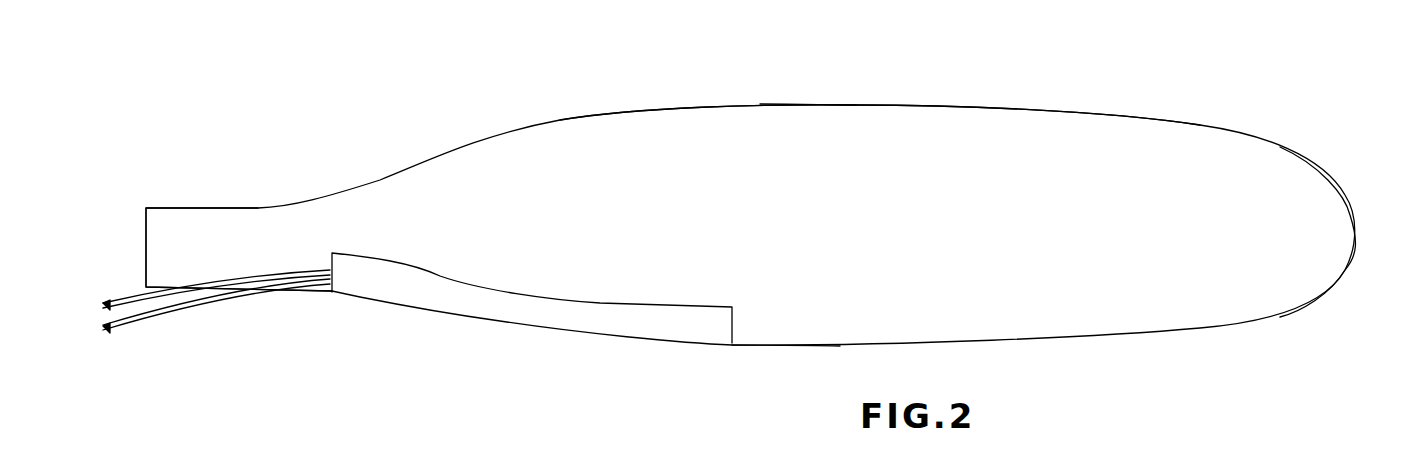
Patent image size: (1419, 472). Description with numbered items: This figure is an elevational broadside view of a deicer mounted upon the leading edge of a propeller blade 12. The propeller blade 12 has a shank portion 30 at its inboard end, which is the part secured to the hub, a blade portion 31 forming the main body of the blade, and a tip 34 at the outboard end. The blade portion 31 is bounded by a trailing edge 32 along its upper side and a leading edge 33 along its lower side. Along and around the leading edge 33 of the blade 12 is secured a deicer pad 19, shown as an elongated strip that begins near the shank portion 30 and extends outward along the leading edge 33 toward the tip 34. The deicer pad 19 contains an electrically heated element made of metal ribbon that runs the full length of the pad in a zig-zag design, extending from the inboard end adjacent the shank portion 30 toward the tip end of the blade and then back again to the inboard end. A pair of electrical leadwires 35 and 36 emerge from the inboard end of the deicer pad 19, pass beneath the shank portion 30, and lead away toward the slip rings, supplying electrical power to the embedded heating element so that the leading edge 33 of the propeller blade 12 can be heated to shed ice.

The propeller blade 12 is at (1103, 358).
The deicer pad 19 is at (518, 318).
The shank portion 30 is at (223, 216).
The blade portion 31 is at (1040, 219).
The trailing edge 32 is at (856, 105).
The leading edge 33 is at (780, 347).
The tip 34 is at (1345, 226).
The electrical leadwire 35 is at (138, 298).
The electrical leadwire 36 is at (163, 315).